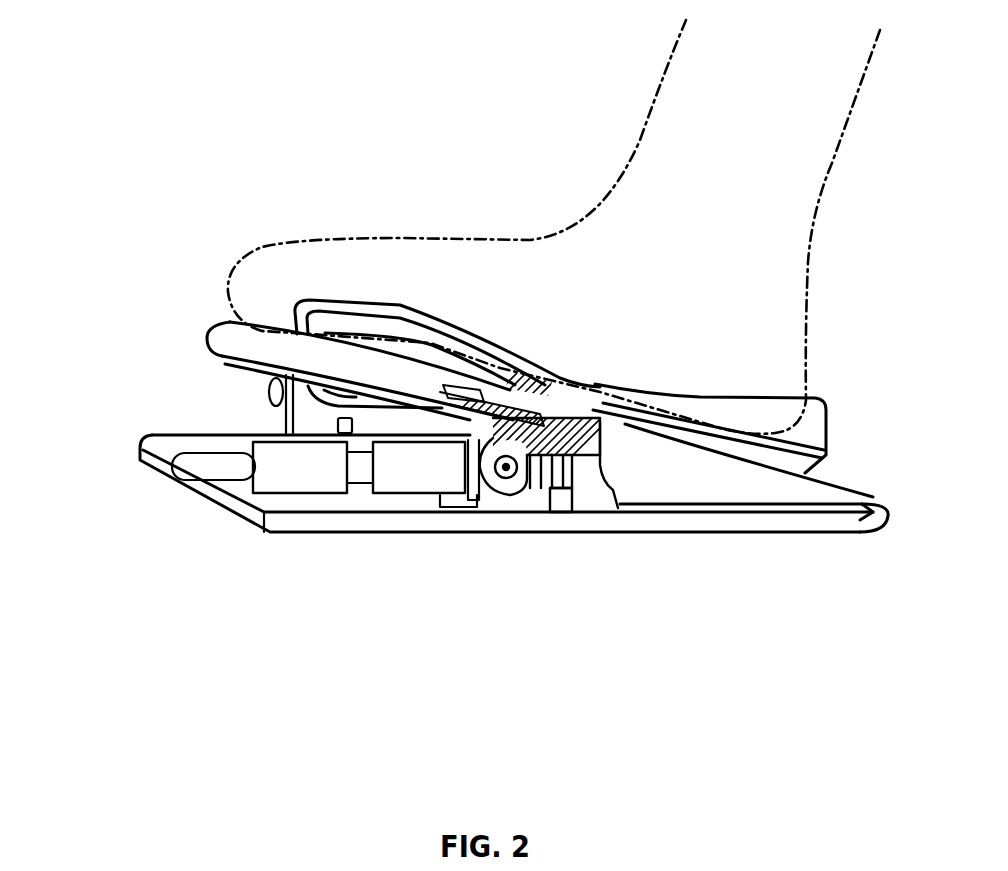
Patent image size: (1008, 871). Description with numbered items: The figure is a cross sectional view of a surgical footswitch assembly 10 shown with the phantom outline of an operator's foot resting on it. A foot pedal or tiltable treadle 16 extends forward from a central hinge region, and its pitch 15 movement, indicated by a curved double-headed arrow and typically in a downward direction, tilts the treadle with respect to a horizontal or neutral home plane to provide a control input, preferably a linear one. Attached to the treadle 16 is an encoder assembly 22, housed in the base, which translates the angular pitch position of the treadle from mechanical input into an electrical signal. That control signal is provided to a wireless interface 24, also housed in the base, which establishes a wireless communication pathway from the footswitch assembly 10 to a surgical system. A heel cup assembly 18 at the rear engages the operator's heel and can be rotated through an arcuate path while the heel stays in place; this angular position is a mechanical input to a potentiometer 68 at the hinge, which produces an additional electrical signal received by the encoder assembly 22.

The footswitch assembly 10 is at (149, 508).
The pitch 15 is at (67, 438).
The foot pedal or treadle 16 is at (222, 322).
The heel cup assembly 18 is at (828, 404).
The encoder assembly 22 is at (435, 481).
The wireless interface 24 is at (316, 481).
The potentiometer 68 is at (512, 474).